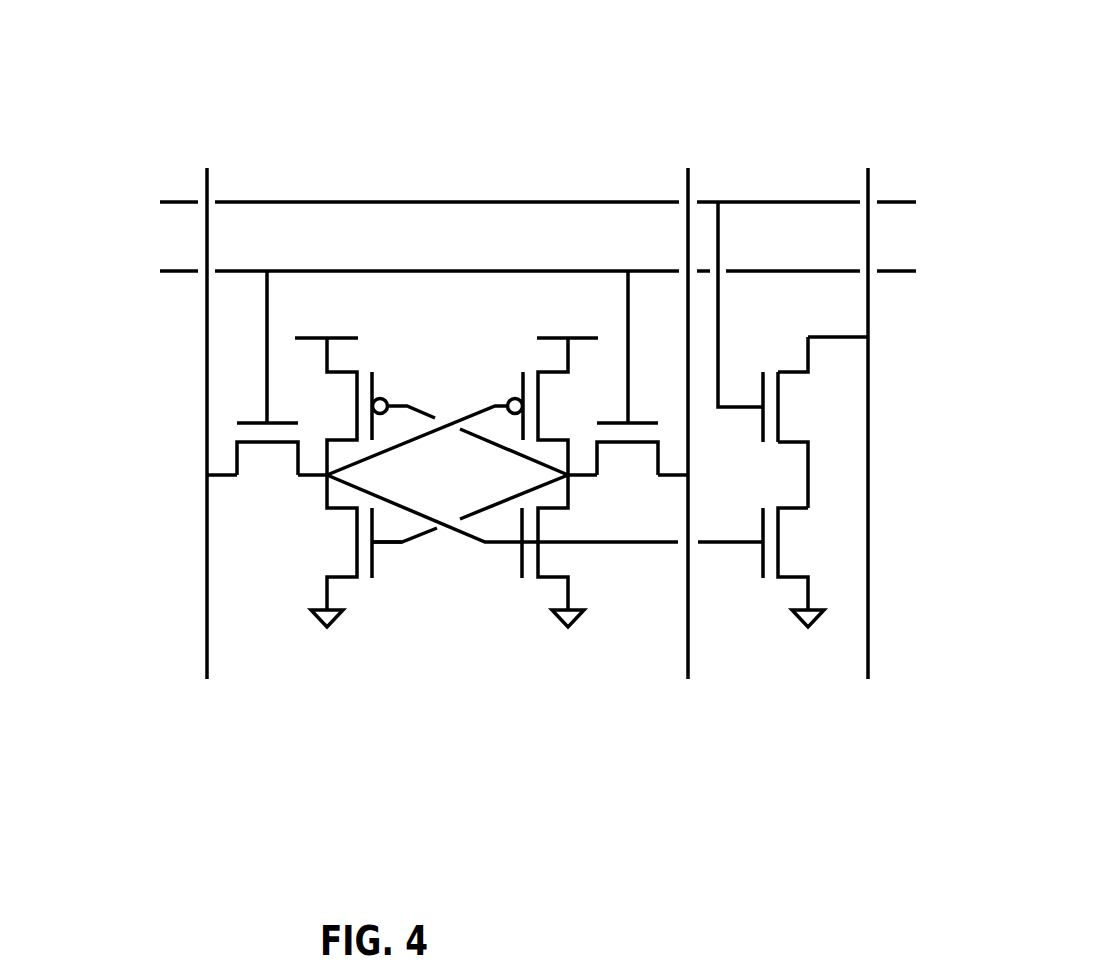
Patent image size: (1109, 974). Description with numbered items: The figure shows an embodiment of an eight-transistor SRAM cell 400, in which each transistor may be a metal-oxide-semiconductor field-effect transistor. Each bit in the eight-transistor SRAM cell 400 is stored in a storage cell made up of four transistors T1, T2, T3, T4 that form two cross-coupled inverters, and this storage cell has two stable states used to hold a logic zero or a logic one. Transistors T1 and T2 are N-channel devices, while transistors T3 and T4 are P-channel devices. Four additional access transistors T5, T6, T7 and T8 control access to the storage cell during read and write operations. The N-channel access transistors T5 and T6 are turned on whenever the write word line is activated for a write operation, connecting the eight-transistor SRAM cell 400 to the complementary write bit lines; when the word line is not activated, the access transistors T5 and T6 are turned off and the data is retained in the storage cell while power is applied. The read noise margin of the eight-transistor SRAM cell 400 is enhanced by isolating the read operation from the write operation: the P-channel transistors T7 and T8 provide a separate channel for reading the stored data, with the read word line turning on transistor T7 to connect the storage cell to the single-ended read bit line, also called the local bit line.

The 8T SRAM cell 400 is at (502, 376).
The transistor T1 is at (341, 406).
The transistor T2 is at (553, 406).
The transistor T3 is at (356, 551).
The transistor T4 is at (554, 551).
The access transistor T5 is at (267, 382).
The access transistor T6 is at (628, 373).
The access transistor T7 is at (796, 422).
The access transistor T8 is at (796, 567).